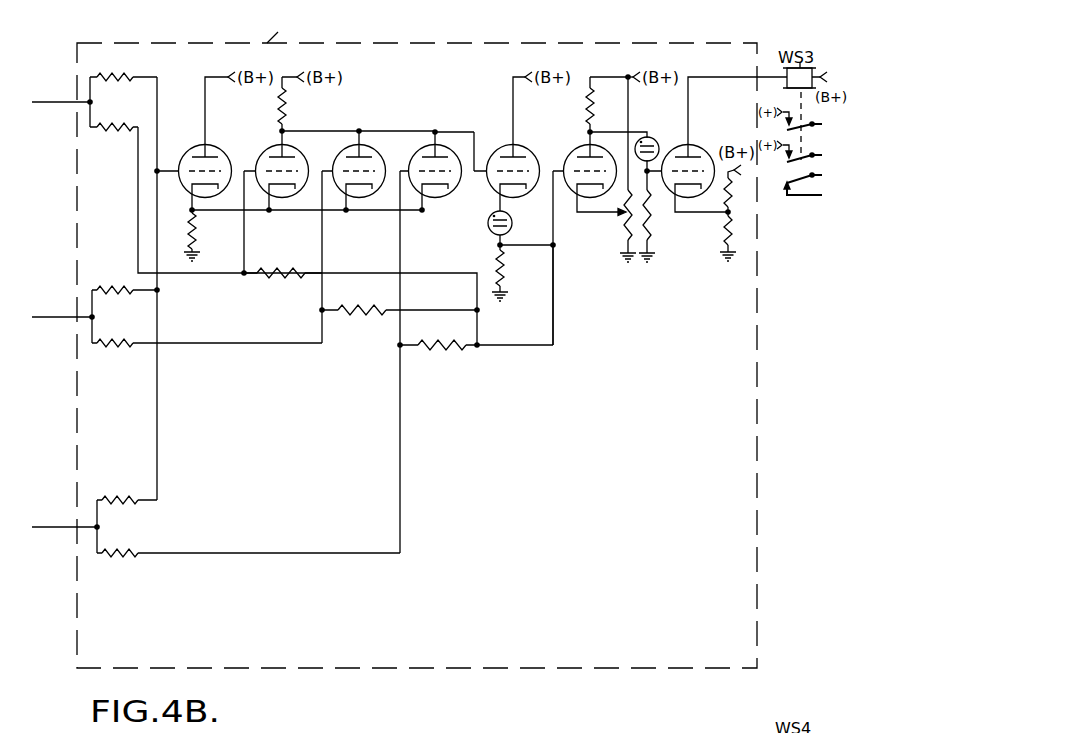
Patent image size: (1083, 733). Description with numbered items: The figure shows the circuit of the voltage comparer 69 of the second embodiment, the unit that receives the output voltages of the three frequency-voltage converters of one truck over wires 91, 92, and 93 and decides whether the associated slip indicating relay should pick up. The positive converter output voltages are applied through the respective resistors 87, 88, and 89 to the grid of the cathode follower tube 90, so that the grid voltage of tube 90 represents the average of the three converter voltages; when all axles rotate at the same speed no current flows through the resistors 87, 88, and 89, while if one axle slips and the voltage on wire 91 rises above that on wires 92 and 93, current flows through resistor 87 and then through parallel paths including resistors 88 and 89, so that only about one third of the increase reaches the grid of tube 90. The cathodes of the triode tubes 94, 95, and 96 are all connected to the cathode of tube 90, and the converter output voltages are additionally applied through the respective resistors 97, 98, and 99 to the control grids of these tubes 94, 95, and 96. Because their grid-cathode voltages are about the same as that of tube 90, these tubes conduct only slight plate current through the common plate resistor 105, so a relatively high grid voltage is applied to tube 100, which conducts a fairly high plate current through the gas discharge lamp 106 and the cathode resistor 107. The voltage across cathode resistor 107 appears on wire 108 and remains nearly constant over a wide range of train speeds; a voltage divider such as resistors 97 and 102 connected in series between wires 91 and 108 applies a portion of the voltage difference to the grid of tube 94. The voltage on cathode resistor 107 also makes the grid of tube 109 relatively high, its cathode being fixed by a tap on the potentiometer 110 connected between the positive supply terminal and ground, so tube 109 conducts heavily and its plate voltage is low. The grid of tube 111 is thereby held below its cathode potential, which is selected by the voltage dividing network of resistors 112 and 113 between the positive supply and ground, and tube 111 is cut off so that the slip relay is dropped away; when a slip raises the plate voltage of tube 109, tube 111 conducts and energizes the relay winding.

The voltage comparer 69 is at (663, 43).
The resistor 87 is at (125, 75).
The resistor 88 is at (103, 284).
The resistor 89 is at (108, 497).
The cathode follower tube 90 is at (214, 153).
The wire 91 is at (53, 101).
The wire 92 is at (53, 315).
The wire 93 is at (57, 526).
The triode tube 94 is at (285, 146).
The triode tube 95 is at (368, 144).
The triode tube 96 is at (443, 145).
The resistor 97 is at (110, 125).
The resistor 98 is at (105, 342).
The resistor 99 is at (120, 548).
The tube 100 is at (520, 145).
The resistor 102 is at (270, 271).
The common plate resistor 105 is at (292, 106).
The gas discharge lamp 106 is at (512, 219).
The cathode resistor 107 is at (506, 278).
The wire 108 is at (553, 293).
The tube 109 is at (593, 144).
The potentiometer 110 is at (627, 220).
The tube 111 is at (693, 145).
The resistor 112 is at (745, 188).
The resistor 113 is at (723, 230).